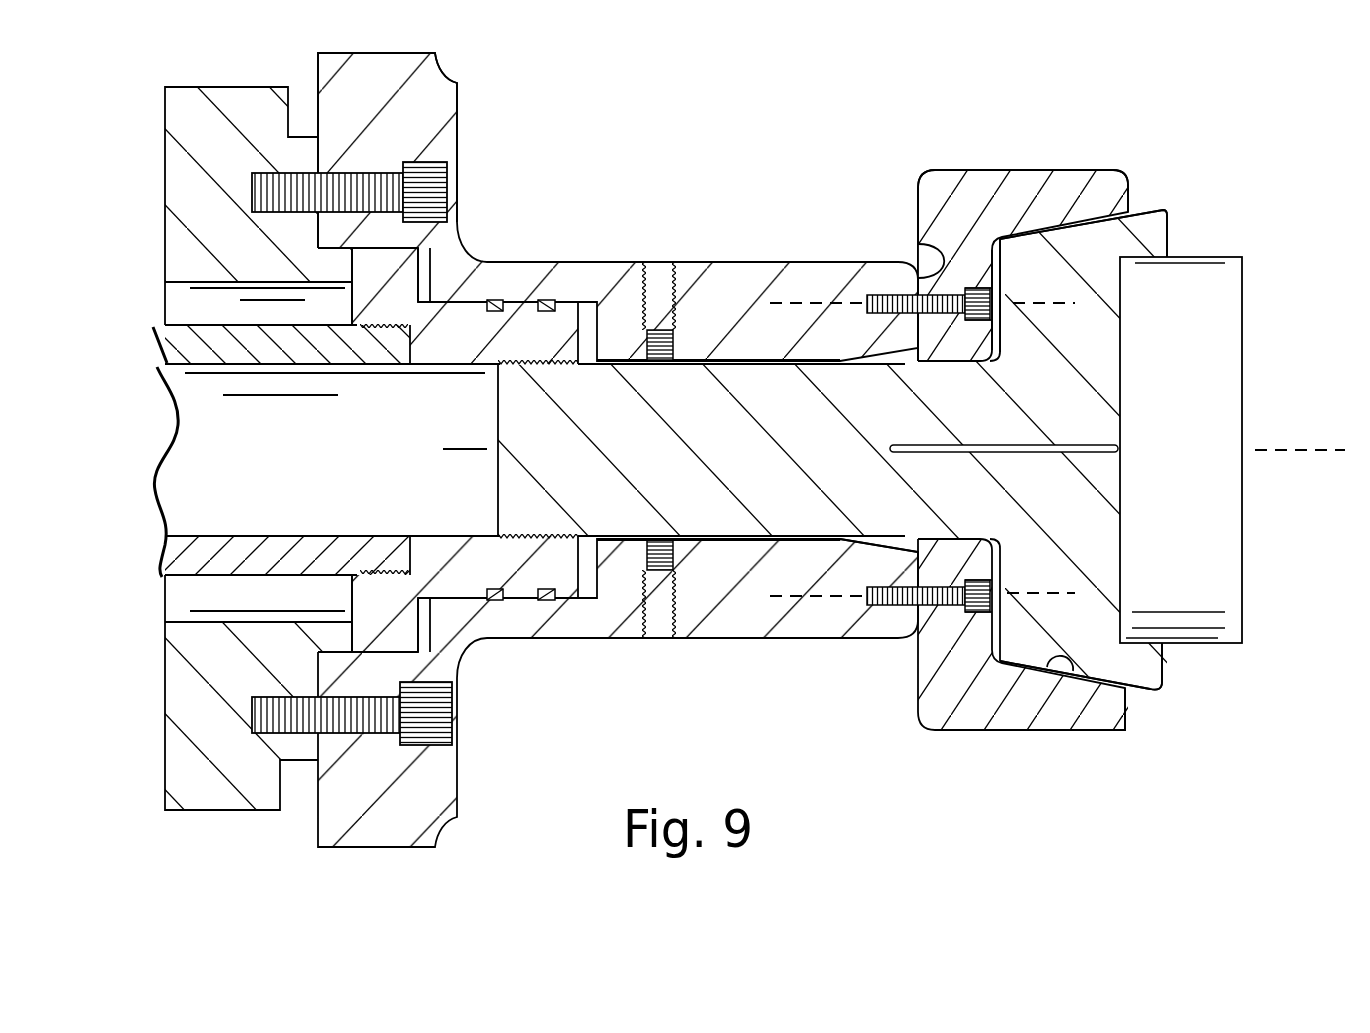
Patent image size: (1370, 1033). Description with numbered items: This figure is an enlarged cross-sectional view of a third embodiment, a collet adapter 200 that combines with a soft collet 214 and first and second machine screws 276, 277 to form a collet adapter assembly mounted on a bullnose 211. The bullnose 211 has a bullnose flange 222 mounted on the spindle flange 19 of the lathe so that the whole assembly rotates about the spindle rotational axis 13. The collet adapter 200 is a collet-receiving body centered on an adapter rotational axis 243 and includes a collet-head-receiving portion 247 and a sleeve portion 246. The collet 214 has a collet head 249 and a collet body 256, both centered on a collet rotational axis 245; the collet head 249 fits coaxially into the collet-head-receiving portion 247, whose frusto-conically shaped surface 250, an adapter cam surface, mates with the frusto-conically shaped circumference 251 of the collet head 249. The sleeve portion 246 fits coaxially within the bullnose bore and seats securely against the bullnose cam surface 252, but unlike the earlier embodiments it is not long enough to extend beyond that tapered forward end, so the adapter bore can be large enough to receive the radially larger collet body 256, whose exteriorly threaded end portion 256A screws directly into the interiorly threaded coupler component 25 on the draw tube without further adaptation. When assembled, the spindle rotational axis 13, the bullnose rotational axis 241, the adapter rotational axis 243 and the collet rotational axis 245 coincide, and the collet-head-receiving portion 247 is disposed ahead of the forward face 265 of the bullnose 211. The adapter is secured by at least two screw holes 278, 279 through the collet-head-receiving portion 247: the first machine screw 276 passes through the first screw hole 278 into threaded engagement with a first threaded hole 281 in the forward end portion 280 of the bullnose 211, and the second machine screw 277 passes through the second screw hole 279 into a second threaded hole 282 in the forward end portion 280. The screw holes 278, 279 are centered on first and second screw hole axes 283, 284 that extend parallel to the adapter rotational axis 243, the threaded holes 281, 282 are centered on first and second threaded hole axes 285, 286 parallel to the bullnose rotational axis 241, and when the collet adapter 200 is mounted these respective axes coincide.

The spindle flange 19 is at (245, 108).
The bullnose flange 222 is at (445, 97).
The interiorly threaded coupler component 25 is at (490, 298).
The bullnose 211 is at (688, 262).
The second threaded hole axis 286 is at (782, 303).
The second threaded hole 282 is at (866, 292).
The forward face 265 is at (918, 240).
The collet adapter 200 is at (913, 160).
The second machine screw 277 is at (978, 290).
The collet-head-receiving portion 247 is at (1053, 190).
The collet head 249 is at (1140, 232).
The soft collet 214 is at (1170, 205).
The second screw hole axis 284 is at (1085, 310).
The second screw hole 279 is at (1002, 312).
The first screw hole 278 is at (1120, 437).
The first screw hole axis 283 is at (1068, 592).
The spindle rotational axis 13 is at (1342, 453).
The bullnose rotational axis 241 is at (1300, 509).
The adapter rotational axis 243 is at (1300, 525).
The collet rotational axis 245 is at (1300, 541).
The frusto-conically shaped circumference 251 is at (1138, 692).
The frusto-conically shaped surface 250 is at (1077, 667).
The first machine screw 276 is at (1003, 728).
The sleeve portion 246 is at (947, 730).
The forward end portion 280 is at (900, 628).
The first threaded hole 281 is at (880, 605).
The bullnose cam surface 252 is at (842, 540).
The first threaded hole axis 285 is at (775, 603).
The collet body 256 is at (628, 512).
The nut 256A is at (520, 535).